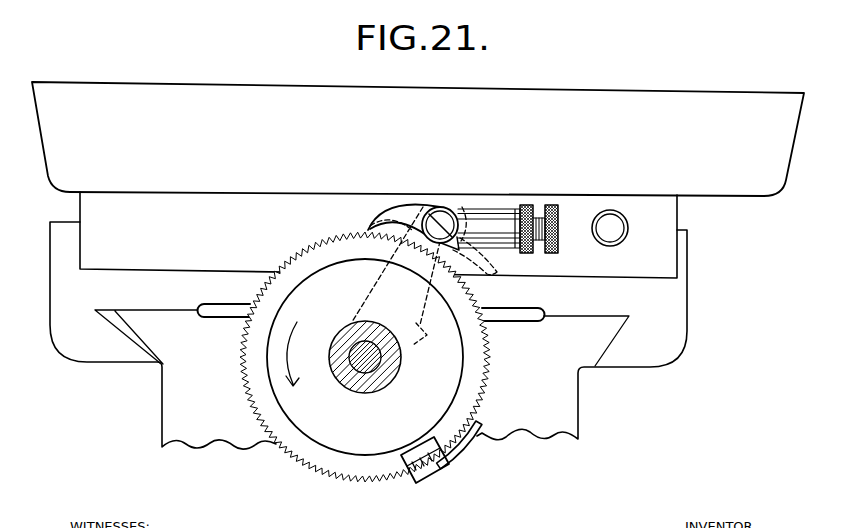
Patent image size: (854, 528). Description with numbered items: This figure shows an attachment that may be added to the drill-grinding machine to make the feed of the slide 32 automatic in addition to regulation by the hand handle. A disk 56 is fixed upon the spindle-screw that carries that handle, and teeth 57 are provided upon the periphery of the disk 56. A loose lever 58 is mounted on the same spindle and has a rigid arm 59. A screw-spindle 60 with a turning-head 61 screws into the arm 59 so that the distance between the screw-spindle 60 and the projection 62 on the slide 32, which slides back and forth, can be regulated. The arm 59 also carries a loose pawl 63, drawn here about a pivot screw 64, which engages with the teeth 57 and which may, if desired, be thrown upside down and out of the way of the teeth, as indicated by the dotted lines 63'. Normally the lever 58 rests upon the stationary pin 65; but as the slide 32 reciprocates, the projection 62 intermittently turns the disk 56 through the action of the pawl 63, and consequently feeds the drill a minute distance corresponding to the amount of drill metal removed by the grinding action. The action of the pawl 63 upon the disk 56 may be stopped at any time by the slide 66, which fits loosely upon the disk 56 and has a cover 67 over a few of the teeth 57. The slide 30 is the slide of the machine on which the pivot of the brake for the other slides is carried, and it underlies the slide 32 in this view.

The slide 30 is at (368, 335).
The slide 32 is at (378, 235).
The disk 56 is at (365, 357).
The teeth 57 is at (346, 230).
The loose lever 58 is at (411, 352).
The rigid arm 59 is at (480, 218).
The screw-spindle 60 is at (539, 213).
The turning-head 61 is at (558, 248).
The projection 62 is at (614, 228).
The loose pawl 63 is at (413, 204).
The pawl in thrown-over position 63' is at (449, 266).
The pivot screw 64 is at (437, 214).
The stationary pin 65 is at (434, 343).
The slide 66 is at (424, 463).
The cover 67 is at (468, 446).